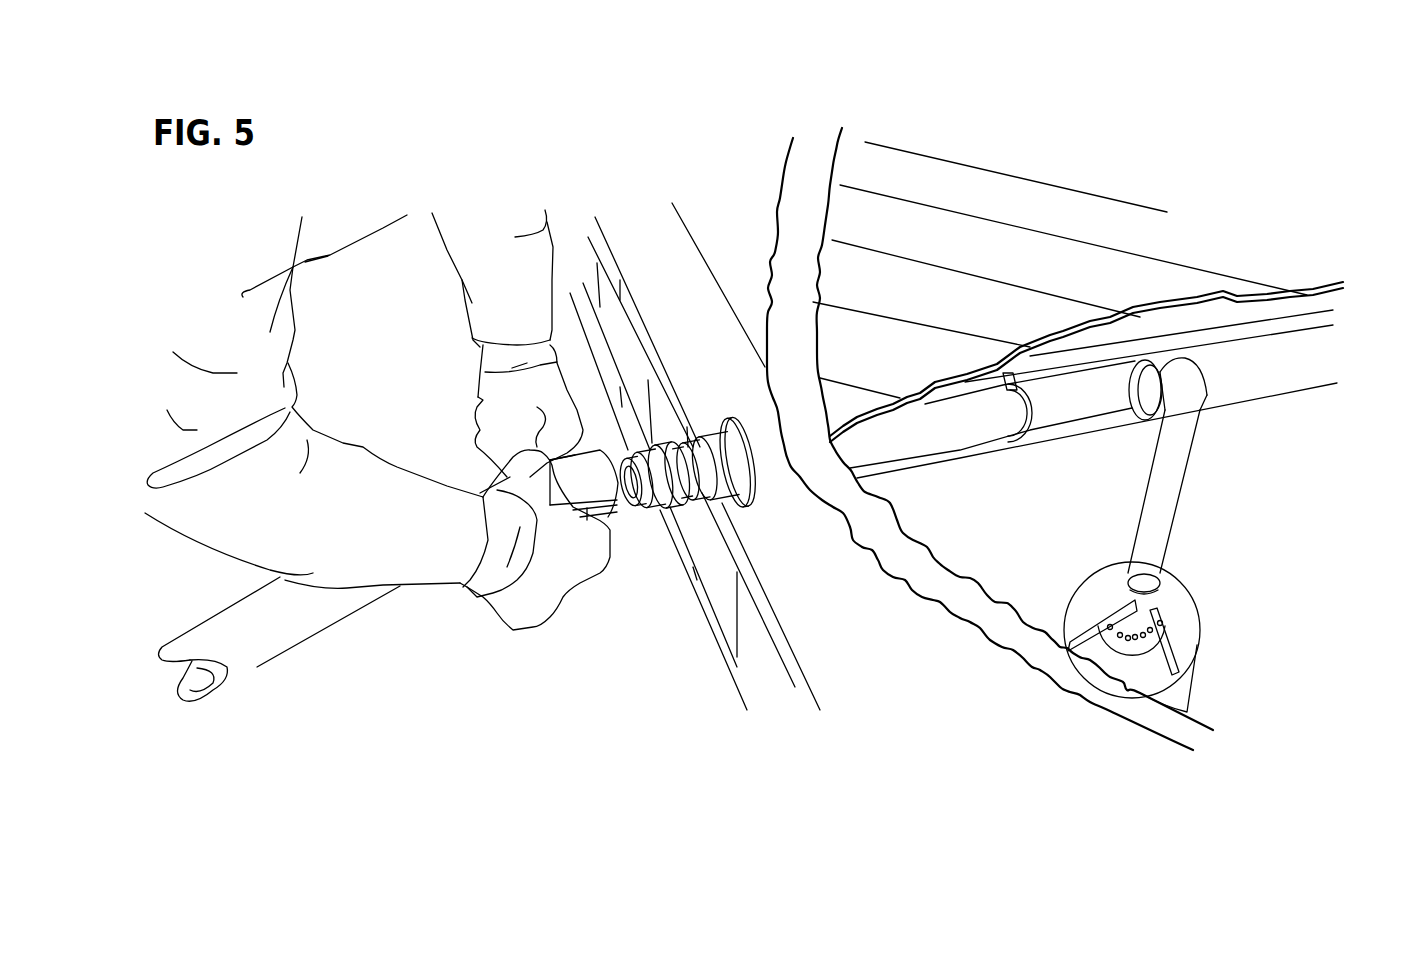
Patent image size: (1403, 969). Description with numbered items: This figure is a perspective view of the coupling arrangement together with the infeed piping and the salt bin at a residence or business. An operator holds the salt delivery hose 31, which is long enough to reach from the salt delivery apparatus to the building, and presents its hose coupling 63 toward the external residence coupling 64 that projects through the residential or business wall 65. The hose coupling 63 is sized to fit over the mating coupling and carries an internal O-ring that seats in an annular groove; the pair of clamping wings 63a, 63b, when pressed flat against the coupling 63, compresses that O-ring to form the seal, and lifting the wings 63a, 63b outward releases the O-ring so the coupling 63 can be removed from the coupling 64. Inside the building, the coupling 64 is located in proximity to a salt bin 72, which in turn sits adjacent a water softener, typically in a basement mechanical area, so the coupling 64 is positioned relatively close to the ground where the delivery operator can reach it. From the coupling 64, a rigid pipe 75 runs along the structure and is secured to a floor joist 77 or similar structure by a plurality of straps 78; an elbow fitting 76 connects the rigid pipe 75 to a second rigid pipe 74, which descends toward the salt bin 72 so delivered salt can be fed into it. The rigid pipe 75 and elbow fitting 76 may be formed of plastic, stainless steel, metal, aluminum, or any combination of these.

The salt delivery hose 31 is at (258, 643).
The hose coupling 63 is at (588, 462).
The clamping wing 63a is at (577, 443).
The clamping wing 63b is at (600, 517).
The external residence coupling 64 is at (710, 422).
The residential or business wall 65 is at (657, 247).
The salt bin 72 is at (1177, 693).
The rigid pipe 74 is at (1178, 456).
The rigid pipe 75 is at (1093, 413).
The elbow fitting 76 is at (1190, 383).
The floor joist 77 is at (1313, 360).
The strap 78 is at (1027, 417).